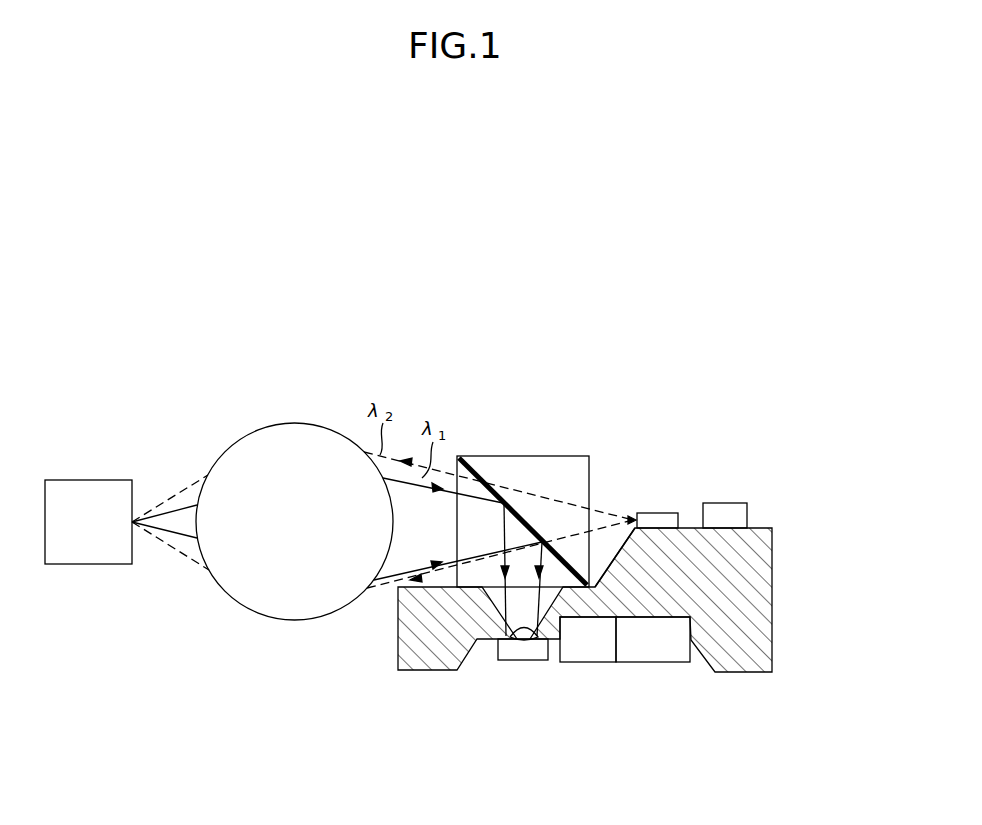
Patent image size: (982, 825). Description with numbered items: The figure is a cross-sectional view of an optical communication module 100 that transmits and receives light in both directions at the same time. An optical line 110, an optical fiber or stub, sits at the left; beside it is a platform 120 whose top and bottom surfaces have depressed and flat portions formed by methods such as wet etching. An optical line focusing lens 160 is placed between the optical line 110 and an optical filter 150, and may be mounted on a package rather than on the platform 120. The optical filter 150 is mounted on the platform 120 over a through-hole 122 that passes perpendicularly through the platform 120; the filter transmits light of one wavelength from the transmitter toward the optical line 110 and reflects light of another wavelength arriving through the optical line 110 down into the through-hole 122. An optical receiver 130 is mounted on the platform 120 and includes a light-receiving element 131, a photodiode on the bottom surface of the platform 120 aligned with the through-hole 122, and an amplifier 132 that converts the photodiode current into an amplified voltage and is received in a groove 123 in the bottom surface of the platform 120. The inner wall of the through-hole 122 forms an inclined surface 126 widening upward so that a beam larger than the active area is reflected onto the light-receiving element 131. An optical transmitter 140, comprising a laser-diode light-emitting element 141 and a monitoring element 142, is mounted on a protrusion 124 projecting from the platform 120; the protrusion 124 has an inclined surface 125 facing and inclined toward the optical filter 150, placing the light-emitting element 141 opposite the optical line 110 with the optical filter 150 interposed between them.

The optical communication module 100 is at (166, 331).
The optical line 110 is at (83, 480).
The optical line focusing lens 160 is at (236, 598).
The optical filter 150 is at (535, 455).
The inclined surface 125 is at (610, 548).
The light-emitting element 141 is at (664, 513).
The monitoring element 142 is at (723, 503).
The optical transmitter 140 is at (776, 502).
The protrusion 124 is at (768, 549).
The platform 120 is at (784, 684).
The light-receiving element 131 is at (500, 662).
The through-hole 122 is at (523, 637).
The inclined surface 126 is at (538, 637).
The amplifier 132 is at (602, 663).
The groove 123 is at (652, 618).
The optical receiver 130 is at (676, 680).